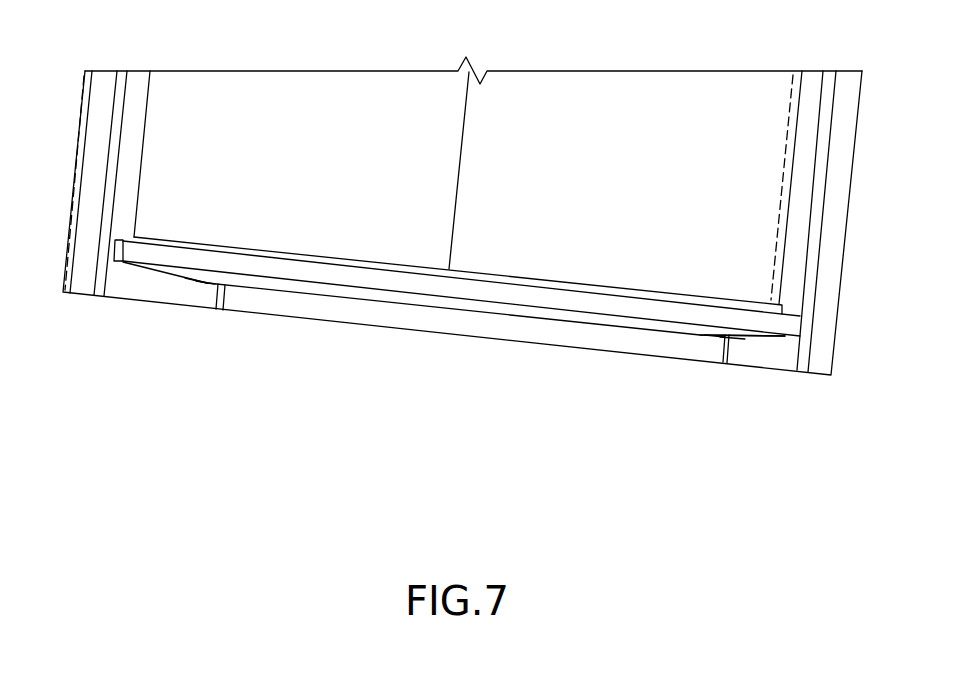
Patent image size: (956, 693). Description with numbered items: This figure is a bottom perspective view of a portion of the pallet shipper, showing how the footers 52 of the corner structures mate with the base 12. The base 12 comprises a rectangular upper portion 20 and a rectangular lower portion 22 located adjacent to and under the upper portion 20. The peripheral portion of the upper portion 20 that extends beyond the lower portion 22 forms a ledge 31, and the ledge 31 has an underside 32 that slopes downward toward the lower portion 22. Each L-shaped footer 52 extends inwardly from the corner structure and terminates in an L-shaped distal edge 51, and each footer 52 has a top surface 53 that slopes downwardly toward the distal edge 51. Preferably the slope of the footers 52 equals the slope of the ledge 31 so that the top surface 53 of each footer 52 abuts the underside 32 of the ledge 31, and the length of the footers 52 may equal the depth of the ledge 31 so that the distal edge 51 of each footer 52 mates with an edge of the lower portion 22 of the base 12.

The base 12 is at (495, 345).
The upper portion 20 is at (800, 327).
The lower portion 22 is at (405, 318).
The ledge 31 is at (287, 287).
The underside 32 is at (193, 283).
The distal edge 51 is at (226, 312).
The footer 52 is at (150, 287).
The top surface 53 is at (202, 282).